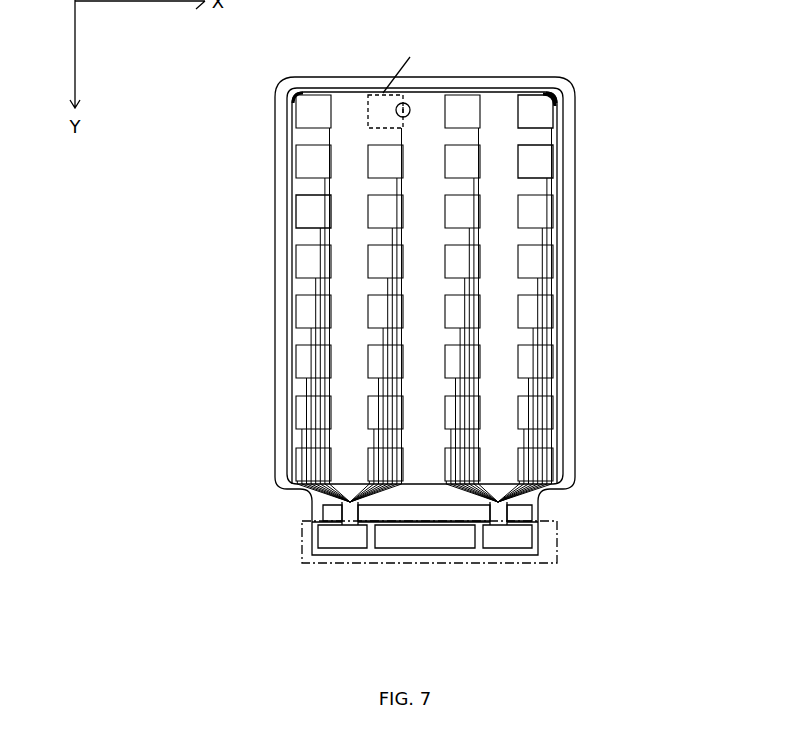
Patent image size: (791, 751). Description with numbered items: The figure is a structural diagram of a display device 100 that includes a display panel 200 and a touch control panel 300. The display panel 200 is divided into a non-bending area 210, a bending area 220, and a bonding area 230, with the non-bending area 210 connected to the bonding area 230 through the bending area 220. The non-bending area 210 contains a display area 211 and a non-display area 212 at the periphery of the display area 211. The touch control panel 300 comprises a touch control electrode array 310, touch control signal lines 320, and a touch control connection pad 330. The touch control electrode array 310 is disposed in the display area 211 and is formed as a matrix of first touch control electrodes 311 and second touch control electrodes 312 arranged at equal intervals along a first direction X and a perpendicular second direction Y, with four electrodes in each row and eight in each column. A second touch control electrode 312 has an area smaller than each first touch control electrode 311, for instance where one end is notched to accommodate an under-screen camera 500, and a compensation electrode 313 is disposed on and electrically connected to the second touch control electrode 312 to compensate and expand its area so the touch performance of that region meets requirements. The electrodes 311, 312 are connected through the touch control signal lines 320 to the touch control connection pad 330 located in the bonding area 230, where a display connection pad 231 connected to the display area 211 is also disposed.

The display device 100 is at (380, 18).
The display panel 200 is at (153, 532).
The non-bending area 210 is at (202, 128).
The display area 211 is at (295, 228).
The non-display area 212 is at (283, 153).
The bending area 220 is at (328, 512).
The bonding area 230 is at (302, 555).
The display connection pad 231 is at (442, 540).
The touch control panel 300 is at (673, 488).
The touch control electrode array 310 is at (625, 85).
The first touch control electrode 311 is at (537, 162).
The second touch control electrode 312 is at (537, 122).
The compensation electrode 313 is at (552, 97).
The touch control signal line 320 is at (550, 188).
The touch control connection pad 330 is at (517, 537).
The under-screen camera 500 is at (408, 104).